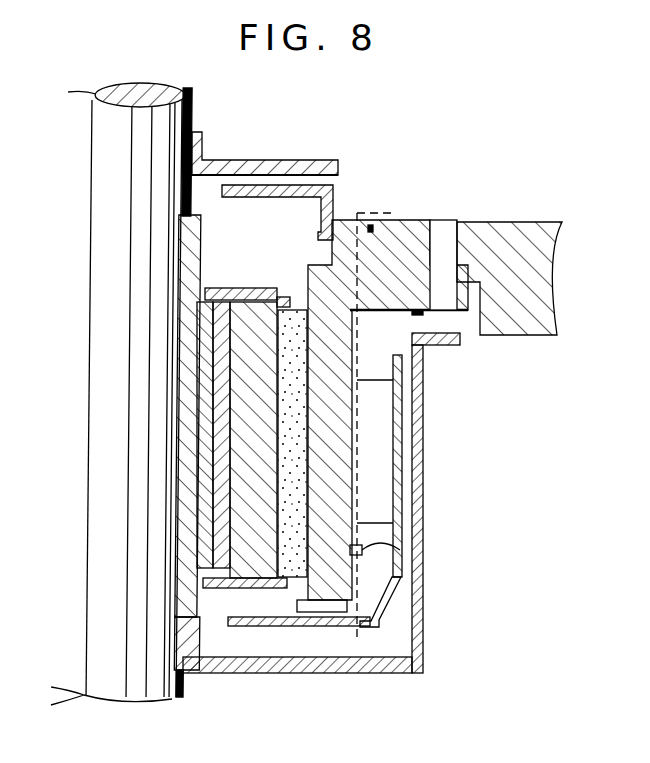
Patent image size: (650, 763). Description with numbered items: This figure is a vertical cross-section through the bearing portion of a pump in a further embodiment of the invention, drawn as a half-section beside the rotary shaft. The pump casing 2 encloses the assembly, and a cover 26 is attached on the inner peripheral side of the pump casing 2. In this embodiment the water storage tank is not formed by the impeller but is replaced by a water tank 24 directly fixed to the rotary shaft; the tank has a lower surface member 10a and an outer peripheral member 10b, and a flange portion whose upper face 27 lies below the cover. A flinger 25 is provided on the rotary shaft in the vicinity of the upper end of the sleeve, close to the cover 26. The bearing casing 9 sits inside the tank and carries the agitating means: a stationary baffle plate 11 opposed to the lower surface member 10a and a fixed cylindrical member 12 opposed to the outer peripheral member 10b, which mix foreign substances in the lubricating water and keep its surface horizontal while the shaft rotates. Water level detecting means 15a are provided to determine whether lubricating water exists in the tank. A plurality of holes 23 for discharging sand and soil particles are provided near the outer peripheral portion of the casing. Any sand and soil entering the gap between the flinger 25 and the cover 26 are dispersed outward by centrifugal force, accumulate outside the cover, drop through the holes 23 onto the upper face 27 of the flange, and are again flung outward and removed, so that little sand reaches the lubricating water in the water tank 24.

The pump casing 2 is at (540, 222).
The bearing casing 9 is at (392, 263).
The holes 23 is at (440, 222).
The water tank 24 is at (176, 640).
The flinger 25 is at (284, 158).
The cover 26 is at (335, 190).
The upper face of flange portion 27 is at (455, 345).
The lower surface member 10a is at (423, 673).
The outer peripheral member 10b is at (423, 438).
The stationary baffle plate 11 is at (362, 624).
The fixed cylindrical member 12 is at (400, 508).
The water level detecting means 15a is at (402, 560).